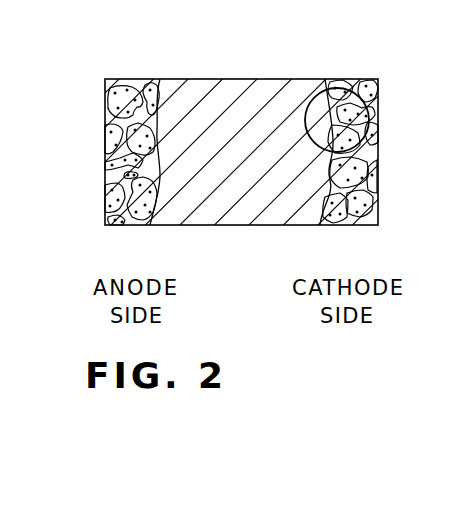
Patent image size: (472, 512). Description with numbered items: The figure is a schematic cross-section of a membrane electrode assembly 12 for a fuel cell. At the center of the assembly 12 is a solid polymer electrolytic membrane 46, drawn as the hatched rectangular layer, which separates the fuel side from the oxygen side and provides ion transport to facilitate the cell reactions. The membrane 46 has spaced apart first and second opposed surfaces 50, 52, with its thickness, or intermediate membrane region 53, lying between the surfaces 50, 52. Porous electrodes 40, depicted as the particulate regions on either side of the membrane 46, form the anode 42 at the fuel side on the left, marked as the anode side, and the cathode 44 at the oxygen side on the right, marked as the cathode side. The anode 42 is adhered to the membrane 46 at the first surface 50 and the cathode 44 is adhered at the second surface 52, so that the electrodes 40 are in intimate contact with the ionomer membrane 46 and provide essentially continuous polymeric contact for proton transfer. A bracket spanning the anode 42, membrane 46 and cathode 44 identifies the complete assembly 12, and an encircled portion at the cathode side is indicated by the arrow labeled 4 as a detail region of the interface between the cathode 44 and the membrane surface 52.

The enlarged detail region 4 is at (383, 115).
The membrane electrode assembly 12 is at (236, 179).
The porous electrodes 40 is at (251, 152).
The anode 42 is at (107, 170).
The cathode 44 is at (372, 197).
The solid polymer electrolytic membrane 46 is at (267, 79).
The first opposed surface 50 is at (172, 90).
The second opposed surface 52 is at (318, 90).
The intermediate membrane region 53 is at (205, 90).